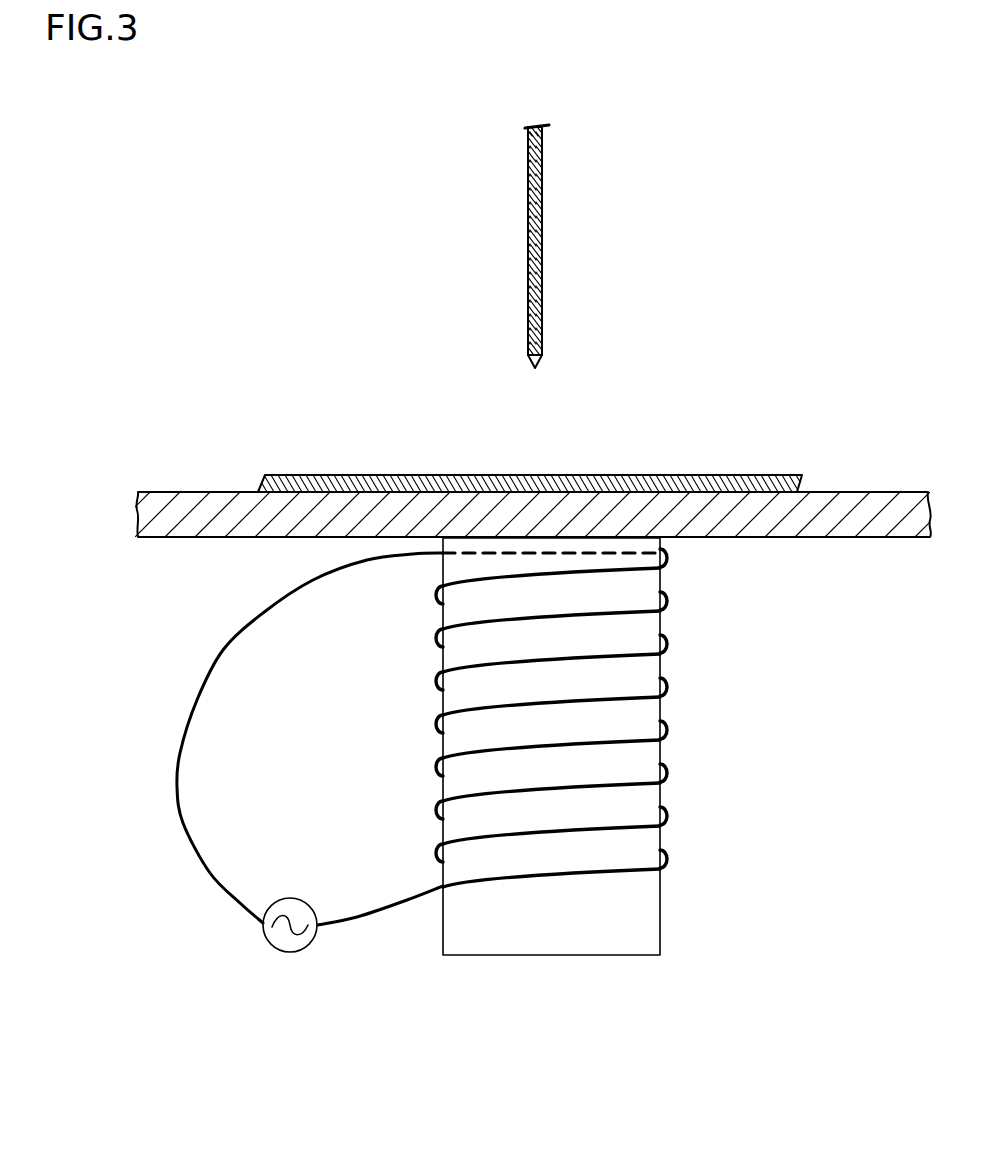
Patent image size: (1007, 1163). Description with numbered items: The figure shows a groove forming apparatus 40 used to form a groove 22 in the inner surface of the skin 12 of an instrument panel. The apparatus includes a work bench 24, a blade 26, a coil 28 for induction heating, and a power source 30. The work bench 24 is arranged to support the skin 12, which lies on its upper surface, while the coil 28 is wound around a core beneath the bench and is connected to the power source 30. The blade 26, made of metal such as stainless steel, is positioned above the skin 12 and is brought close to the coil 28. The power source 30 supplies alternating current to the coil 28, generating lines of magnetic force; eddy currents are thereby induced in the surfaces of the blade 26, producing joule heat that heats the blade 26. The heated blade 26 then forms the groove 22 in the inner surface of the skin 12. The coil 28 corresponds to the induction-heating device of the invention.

The skin 12 is at (262, 487).
The groove 22 is at (535, 486).
The work bench 24 is at (826, 497).
The blade 26 is at (542, 200).
The coil 28 is at (673, 660).
The power source 30 is at (278, 950).
The groove forming apparatus 40 is at (790, 236).